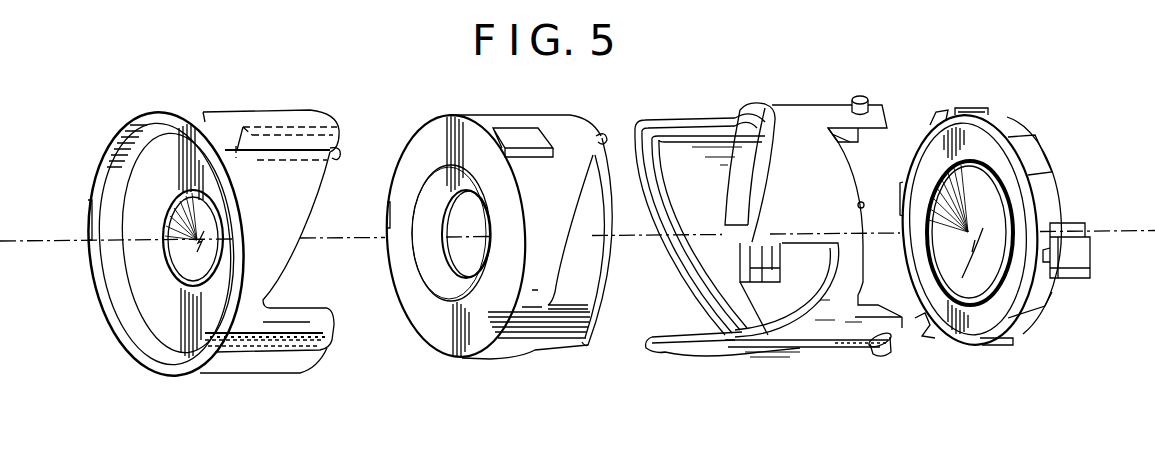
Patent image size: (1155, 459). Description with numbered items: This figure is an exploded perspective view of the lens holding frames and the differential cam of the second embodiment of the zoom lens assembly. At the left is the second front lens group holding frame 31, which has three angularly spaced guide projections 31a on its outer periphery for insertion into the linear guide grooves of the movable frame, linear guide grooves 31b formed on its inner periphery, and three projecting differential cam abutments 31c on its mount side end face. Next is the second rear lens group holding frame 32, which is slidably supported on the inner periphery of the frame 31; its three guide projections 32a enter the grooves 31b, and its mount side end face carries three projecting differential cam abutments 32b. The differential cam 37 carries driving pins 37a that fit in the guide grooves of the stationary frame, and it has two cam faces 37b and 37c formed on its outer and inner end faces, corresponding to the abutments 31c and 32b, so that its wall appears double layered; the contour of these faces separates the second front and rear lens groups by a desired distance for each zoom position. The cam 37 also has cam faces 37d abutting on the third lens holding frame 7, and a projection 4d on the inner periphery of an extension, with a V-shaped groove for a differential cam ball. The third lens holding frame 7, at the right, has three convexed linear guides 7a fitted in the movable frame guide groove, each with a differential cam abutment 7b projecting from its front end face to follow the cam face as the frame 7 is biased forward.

The second front lens group holding frame 31 is at (203, 112).
The guide projections 31a is at (243, 128).
The linear guide grooves 31b is at (326, 167).
The differential cam abutments 31c is at (338, 135).
The second rear lens group holding frame 32 is at (427, 142).
The guide projections 32a is at (527, 133).
The differential cam abutments 32b is at (599, 150).
The differential cam 37 is at (788, 113).
The driving pins 37a is at (860, 96).
The cam face 37b is at (676, 358).
The cam face 37c is at (692, 287).
The cam faces 37d is at (858, 205).
The projection 4d is at (848, 138).
The third lens holding frame 7 is at (1008, 126).
The linear guides 7a is at (946, 120).
The differential cam abutment 7b is at (936, 122).